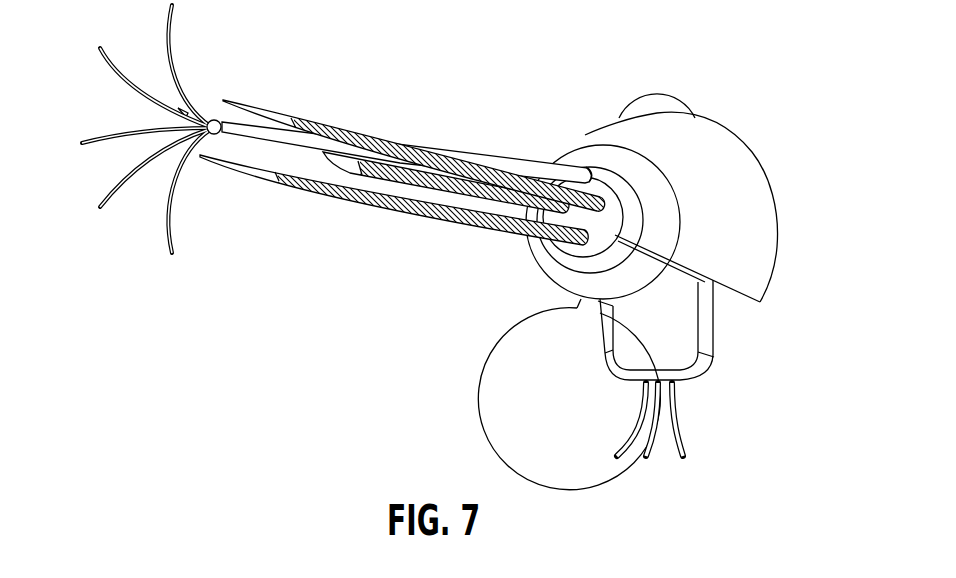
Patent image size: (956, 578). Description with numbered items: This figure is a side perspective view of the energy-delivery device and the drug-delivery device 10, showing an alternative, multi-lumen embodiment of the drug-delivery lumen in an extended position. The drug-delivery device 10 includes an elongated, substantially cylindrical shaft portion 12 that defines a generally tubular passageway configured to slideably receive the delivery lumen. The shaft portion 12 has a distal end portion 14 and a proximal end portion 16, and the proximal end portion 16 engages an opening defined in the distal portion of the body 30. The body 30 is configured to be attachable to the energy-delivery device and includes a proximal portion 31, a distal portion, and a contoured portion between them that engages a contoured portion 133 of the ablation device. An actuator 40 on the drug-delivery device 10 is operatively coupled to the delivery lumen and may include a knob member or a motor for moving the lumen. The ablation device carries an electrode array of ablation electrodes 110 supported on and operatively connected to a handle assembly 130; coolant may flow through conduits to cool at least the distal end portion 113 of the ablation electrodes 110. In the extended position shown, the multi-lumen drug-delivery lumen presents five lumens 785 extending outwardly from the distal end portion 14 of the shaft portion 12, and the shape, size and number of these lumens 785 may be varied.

The drug-delivery device 10 is at (657, 274).
The shaft portion 12 is at (445, 138).
The distal end portion 14 is at (221, 119).
The proximal end portion 16 is at (583, 167).
The body 30 is at (762, 157).
The proximal portion 31 is at (763, 252).
The actuator 40 is at (689, 92).
The ablation electrodes 110 is at (350, 137).
The distal end portion 113 is at (180, 110).
The handle assembly 130 is at (729, 365).
The contoured portion 133 is at (586, 312).
The lumens 785 is at (176, 20).